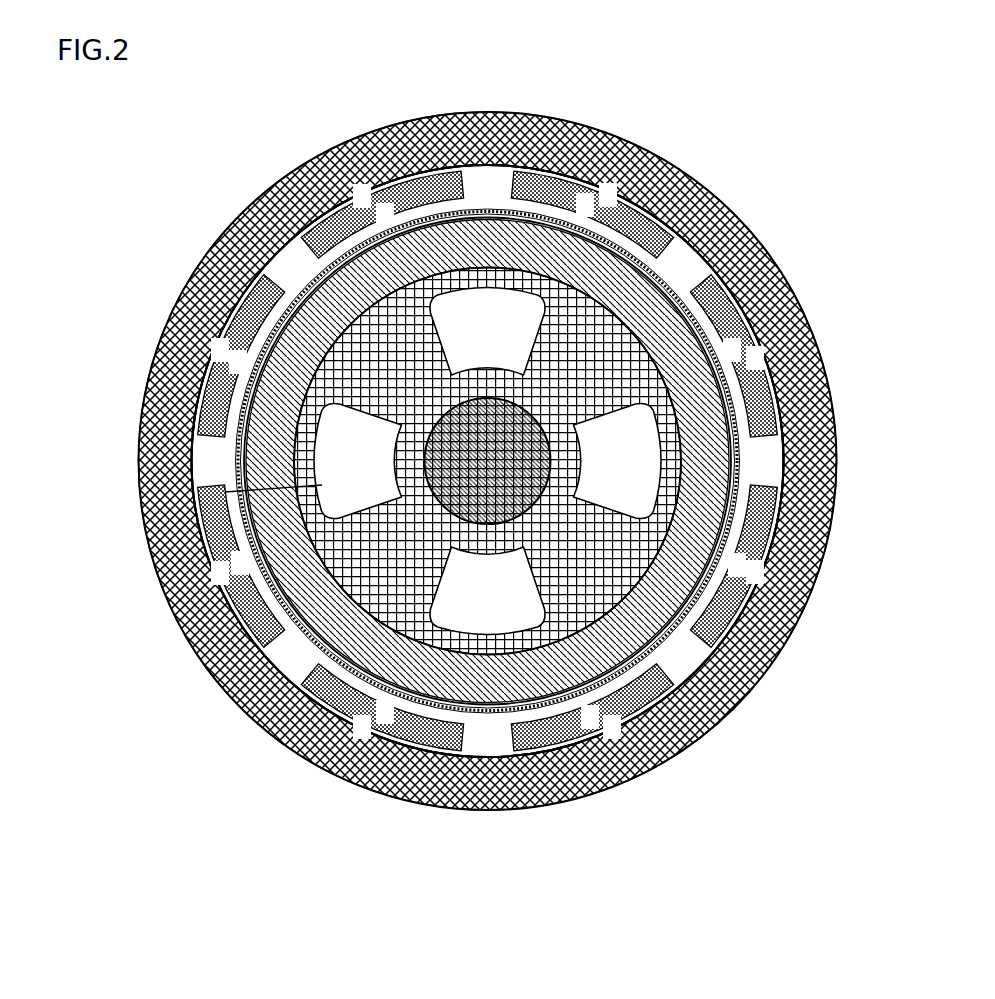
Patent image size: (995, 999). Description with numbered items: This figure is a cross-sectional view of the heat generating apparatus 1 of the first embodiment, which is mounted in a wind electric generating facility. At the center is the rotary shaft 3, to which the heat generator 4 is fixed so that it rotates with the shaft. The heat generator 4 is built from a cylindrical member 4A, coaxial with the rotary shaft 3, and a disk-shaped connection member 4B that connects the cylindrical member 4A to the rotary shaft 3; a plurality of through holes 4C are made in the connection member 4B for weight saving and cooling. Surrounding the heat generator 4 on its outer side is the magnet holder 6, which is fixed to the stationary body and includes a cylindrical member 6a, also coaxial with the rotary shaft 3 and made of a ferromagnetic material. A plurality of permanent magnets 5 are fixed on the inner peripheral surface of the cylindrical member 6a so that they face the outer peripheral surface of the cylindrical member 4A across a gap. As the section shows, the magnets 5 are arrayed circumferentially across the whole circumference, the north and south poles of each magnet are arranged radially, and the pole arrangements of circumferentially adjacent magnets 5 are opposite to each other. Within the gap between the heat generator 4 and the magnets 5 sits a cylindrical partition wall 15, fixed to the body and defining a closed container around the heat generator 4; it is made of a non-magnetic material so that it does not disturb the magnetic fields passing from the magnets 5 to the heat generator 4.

The heat generating apparatus 1 is at (290, 125).
The rotary shaft 3 is at (408, 640).
The heat generator 4 is at (403, 461).
The cylindrical member 4A is at (236, 489).
The connection member 4B is at (297, 560).
The through holes 4C is at (248, 520).
The permanent magnets 5 is at (740, 302).
The magnet holder 6 is at (718, 195).
The cylindrical member 6a is at (488, 461).
The partition wall 15 is at (610, 163).